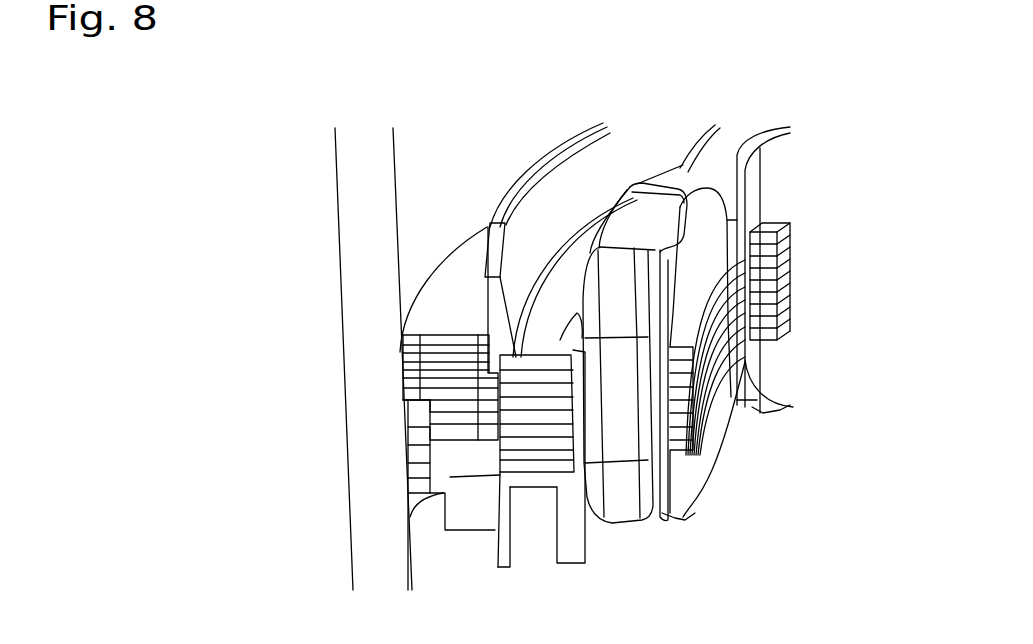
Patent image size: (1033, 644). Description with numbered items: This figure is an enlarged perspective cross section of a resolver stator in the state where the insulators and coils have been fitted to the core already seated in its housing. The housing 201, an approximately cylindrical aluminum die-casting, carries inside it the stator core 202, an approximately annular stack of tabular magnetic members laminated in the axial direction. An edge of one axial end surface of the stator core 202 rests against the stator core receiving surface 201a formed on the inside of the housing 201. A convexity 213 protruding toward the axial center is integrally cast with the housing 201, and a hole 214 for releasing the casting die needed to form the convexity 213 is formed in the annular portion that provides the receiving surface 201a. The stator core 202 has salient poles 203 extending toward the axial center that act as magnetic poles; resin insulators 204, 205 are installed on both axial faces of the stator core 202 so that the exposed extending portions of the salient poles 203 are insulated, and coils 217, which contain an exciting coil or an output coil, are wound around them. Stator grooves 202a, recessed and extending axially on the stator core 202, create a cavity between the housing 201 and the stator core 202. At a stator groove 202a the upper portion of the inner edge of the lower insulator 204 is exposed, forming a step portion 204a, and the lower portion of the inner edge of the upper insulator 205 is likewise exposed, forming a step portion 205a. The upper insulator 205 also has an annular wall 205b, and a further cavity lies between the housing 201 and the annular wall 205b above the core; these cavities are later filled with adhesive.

The housing 201 is at (365, 340).
The stator core receiving surface 201a is at (430, 456).
The stator core 202 is at (473, 270).
The stator groove 202a is at (468, 452).
The salient pole 203 is at (710, 380).
The insulator 204 is at (525, 478).
The step portion 204a is at (500, 540).
The insulator 205 is at (567, 272).
The step portion 205a is at (433, 373).
The annular wall 205b is at (497, 298).
The convexity 213 is at (415, 417).
The hole 214 is at (420, 476).
The coil 217 is at (643, 222).